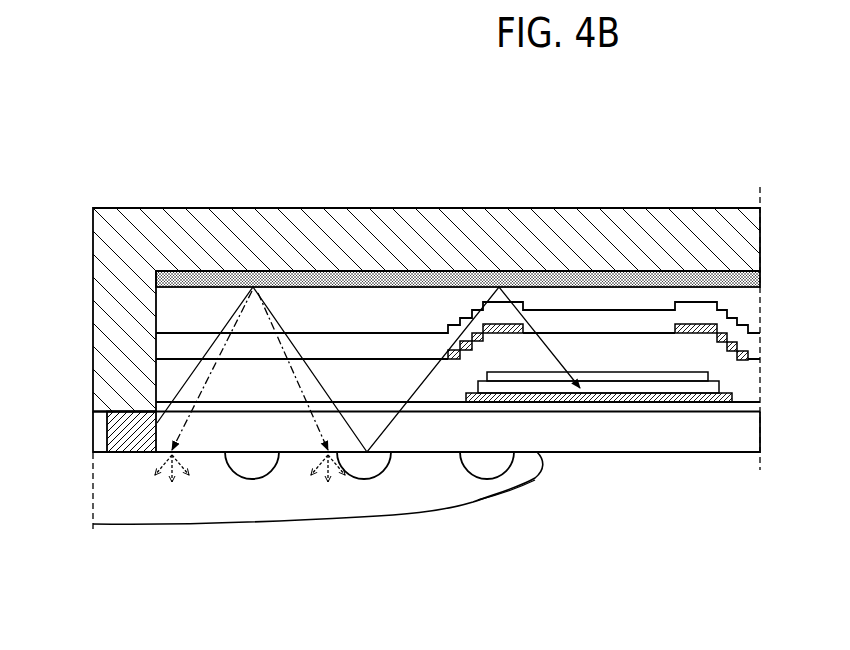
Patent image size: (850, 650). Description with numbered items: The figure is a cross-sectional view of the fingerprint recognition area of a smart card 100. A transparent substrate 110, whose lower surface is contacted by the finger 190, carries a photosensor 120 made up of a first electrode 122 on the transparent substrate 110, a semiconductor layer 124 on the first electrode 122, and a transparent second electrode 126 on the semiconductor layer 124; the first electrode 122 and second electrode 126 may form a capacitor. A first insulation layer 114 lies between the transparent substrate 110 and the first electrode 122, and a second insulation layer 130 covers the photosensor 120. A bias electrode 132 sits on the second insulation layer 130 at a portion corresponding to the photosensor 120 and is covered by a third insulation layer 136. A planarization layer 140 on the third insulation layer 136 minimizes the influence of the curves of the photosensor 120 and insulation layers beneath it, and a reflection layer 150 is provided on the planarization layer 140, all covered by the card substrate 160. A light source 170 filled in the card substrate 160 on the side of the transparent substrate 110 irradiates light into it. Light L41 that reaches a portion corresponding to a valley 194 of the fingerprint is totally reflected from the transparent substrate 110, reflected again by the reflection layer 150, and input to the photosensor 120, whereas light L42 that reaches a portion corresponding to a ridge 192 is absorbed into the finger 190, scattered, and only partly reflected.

The smart card 100 is at (141, 132).
The transparent substrate 110 is at (745, 435).
The first insulation layer 114 is at (753, 407).
The photosensor 120 is at (599, 471).
The first electrode 122 is at (692, 399).
The semiconductor layer 124 is at (627, 388).
The second electrode 126 is at (707, 527).
The second insulation layer 130 is at (743, 375).
The bias electrode 132 is at (676, 323).
The third insulation layer 136 is at (750, 342).
The planarization layer 140 is at (750, 308).
The reflection layer 150 is at (758, 280).
The card substrate 160 is at (743, 243).
The light source 170 is at (122, 430).
The finger 190 is at (172, 498).
The ridge 192 is at (297, 453).
The valley 194 is at (255, 453).
The light L41 is at (386, 428).
The light L42 is at (190, 428).